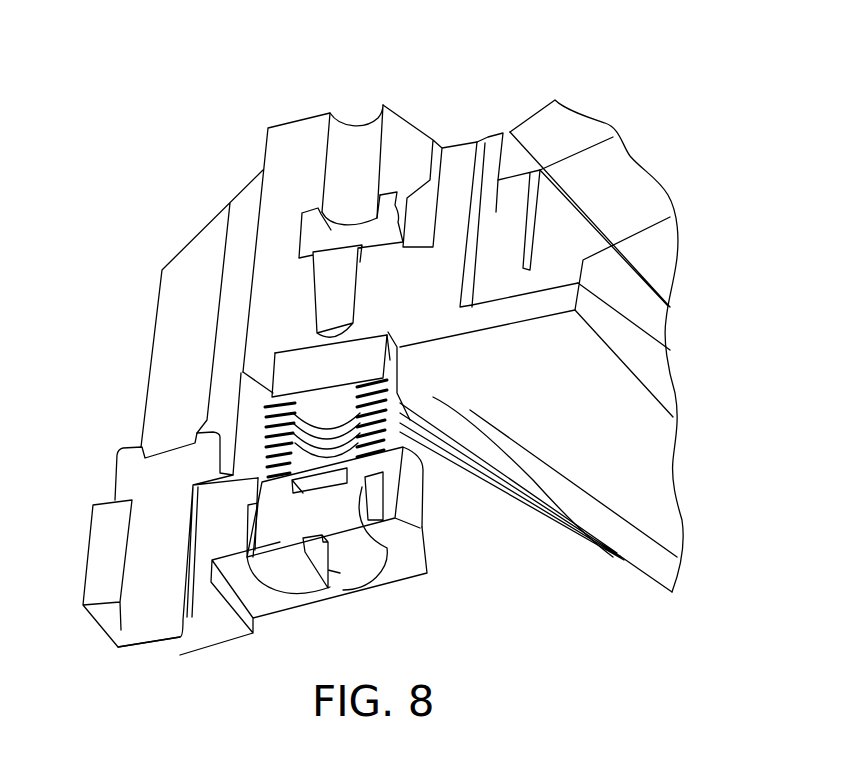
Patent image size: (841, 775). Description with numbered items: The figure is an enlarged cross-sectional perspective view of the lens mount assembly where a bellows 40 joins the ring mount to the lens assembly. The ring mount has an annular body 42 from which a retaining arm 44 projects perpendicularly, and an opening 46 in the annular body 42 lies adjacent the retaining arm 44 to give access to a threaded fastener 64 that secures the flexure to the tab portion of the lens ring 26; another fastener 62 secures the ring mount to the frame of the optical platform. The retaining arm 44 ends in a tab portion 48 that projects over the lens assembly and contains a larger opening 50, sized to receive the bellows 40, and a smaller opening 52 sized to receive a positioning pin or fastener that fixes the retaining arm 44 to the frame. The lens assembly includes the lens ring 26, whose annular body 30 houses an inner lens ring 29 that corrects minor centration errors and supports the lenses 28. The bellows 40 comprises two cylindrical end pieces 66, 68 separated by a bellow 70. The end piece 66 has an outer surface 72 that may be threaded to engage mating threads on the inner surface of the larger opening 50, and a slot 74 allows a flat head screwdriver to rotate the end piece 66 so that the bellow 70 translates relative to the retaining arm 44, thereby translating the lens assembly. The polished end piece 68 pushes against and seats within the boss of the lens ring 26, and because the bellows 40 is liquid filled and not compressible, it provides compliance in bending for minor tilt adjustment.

The lens ring 26 is at (478, 141).
The lenses 28 is at (622, 172).
The inner lens ring 29 is at (500, 210).
The annular body 30 is at (415, 287).
The bellows 40 is at (270, 393).
The annular body 42 is at (302, 138).
The retaining arm 44 is at (167, 362).
The opening 46 is at (365, 145).
The tab portion 48 is at (393, 570).
The larger opening 50 is at (387, 547).
The smaller opening 52 is at (123, 557).
The fastener 62 is at (147, 482).
The fastener 64 is at (302, 242).
The end piece 66 is at (285, 532).
The end piece 68 is at (298, 360).
The bellow 70 is at (462, 480).
The outer surface 72 is at (367, 480).
The slot 74 is at (328, 562).